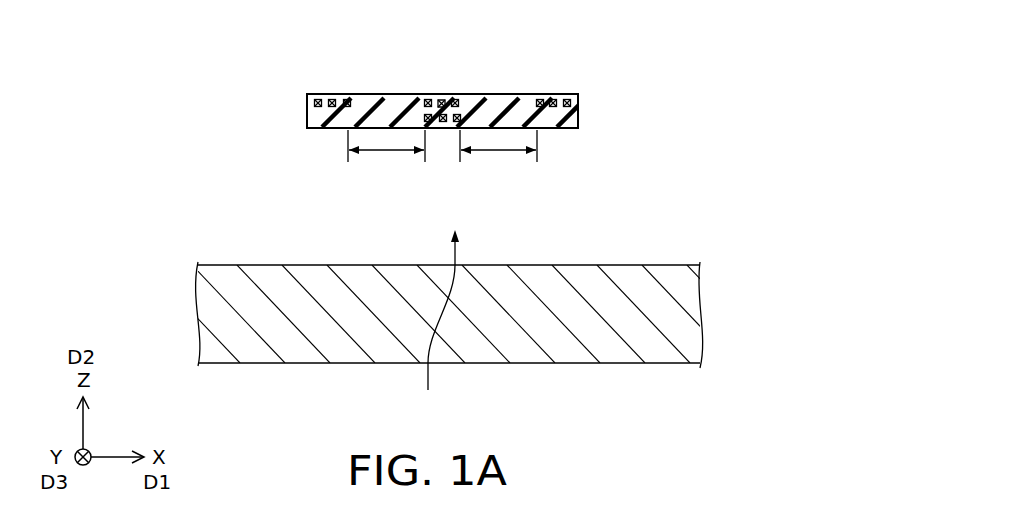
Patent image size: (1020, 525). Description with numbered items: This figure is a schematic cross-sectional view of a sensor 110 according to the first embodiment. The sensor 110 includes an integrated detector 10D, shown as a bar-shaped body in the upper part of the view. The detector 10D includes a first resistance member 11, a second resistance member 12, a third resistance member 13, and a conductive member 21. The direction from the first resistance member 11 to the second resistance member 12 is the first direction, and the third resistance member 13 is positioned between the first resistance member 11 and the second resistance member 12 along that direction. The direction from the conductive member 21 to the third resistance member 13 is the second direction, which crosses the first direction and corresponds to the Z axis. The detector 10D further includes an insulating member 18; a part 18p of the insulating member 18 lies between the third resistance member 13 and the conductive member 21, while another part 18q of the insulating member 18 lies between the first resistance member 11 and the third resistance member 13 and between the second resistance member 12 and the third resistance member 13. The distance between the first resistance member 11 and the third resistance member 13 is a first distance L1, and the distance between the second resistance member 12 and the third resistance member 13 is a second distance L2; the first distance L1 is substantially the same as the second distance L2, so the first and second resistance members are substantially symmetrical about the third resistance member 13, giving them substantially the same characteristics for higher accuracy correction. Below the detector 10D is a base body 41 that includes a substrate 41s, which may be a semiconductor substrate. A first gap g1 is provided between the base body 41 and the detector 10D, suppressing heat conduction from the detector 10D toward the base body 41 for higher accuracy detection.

The detector 10D is at (268, 88).
The first resistance member 11 is at (318, 97).
The second resistance member 12 is at (570, 101).
The third resistance member 13 is at (442, 101).
The insulating member 18 is at (320, 112).
The part of the insulating member 18p is at (424, 109).
The another part of the insulating member 18q is at (386, 103).
The conductive member 21 is at (462, 116).
The sensor 110 is at (689, 68).
The first distance L1 is at (386, 158).
The second distance L2 is at (498, 158).
The base body 41 is at (317, 312).
The substrate 41s is at (253, 310).
The first gap g1 is at (439, 326).